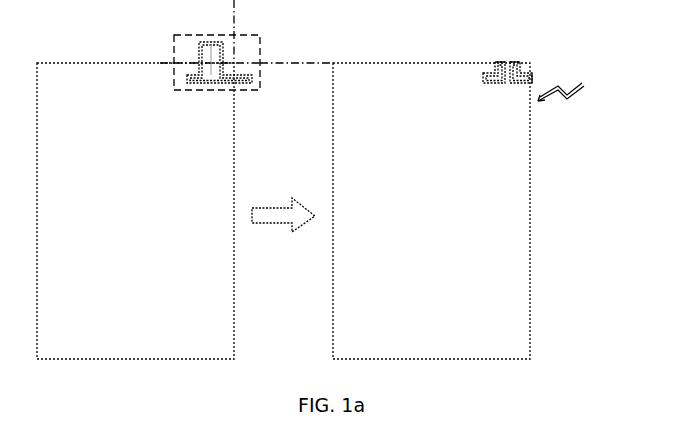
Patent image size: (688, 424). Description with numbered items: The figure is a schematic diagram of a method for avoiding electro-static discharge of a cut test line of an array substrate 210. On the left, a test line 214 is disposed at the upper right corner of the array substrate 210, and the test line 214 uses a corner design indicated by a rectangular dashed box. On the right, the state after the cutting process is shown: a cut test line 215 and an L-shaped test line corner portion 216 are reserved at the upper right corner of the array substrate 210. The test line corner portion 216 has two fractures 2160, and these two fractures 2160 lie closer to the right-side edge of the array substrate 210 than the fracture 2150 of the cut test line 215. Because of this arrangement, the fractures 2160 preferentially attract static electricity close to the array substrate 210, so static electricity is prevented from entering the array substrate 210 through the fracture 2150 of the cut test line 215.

The array substrate 210 is at (210, 308).
The test line 214 is at (238, 77).
The cut test line 215 is at (499, 66).
The fracture of the cut test line 2150 is at (496, 60).
The test line corner portion 216 is at (523, 68).
The fractures 2160 is at (517, 60).